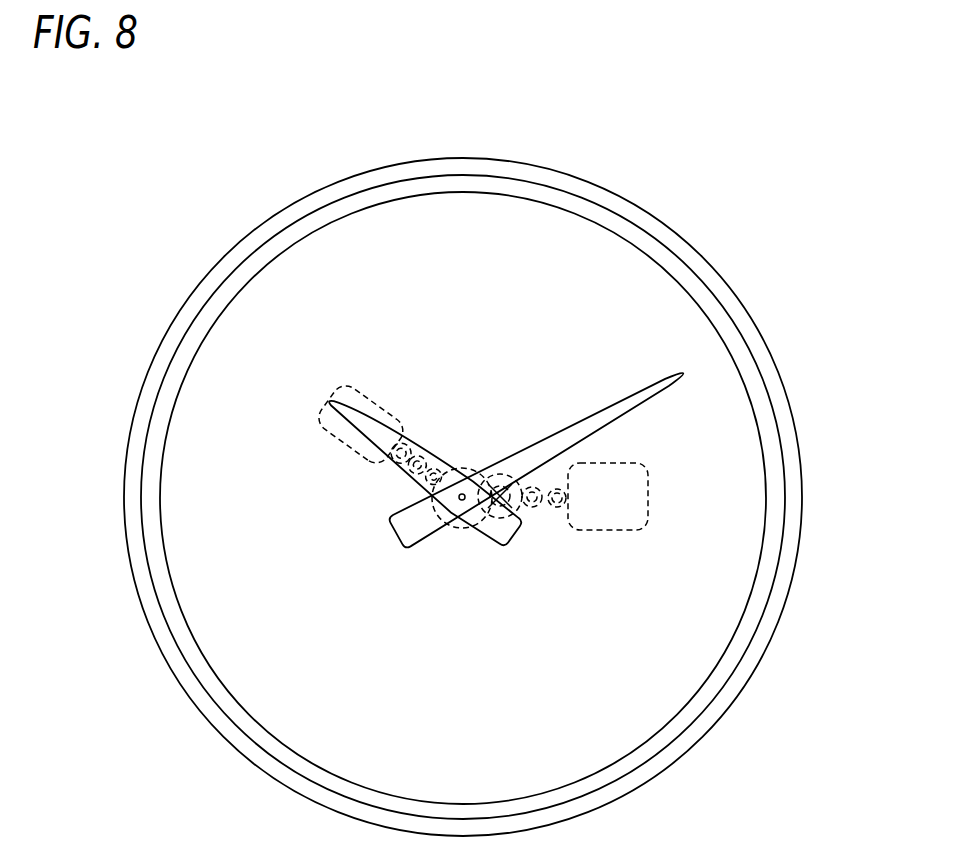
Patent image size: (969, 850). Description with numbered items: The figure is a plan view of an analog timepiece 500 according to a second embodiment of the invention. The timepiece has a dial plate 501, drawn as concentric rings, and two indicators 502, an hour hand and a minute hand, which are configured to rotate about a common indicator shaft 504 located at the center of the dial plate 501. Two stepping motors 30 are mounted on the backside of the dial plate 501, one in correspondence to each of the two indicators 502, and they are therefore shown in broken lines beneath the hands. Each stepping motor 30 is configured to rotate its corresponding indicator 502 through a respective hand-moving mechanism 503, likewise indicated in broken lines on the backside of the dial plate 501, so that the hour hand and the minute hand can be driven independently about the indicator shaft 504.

The analog timepiece 500 is at (715, 188).
The dial plate 501 is at (302, 282).
The indicators 502 is at (348, 407).
The hand-moving mechanisms 503 is at (402, 470).
The indicator shaft 504 is at (462, 494).
The stepping motor 30 is at (648, 487).